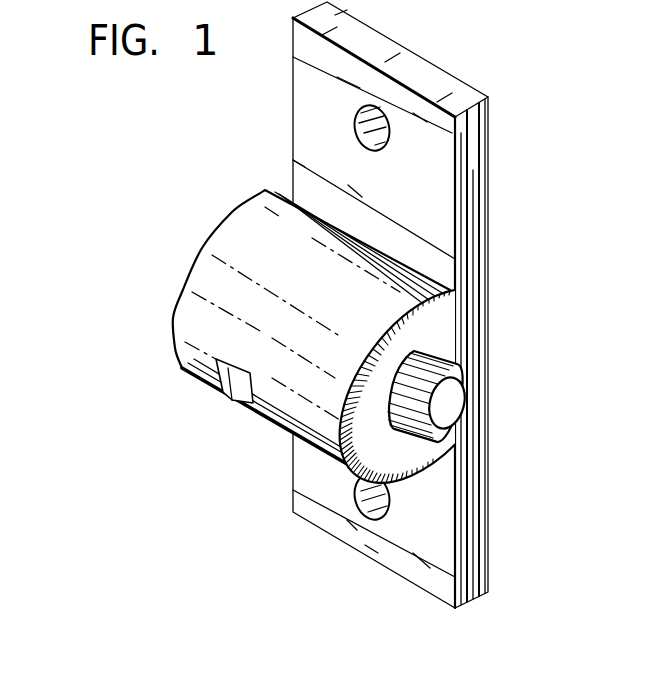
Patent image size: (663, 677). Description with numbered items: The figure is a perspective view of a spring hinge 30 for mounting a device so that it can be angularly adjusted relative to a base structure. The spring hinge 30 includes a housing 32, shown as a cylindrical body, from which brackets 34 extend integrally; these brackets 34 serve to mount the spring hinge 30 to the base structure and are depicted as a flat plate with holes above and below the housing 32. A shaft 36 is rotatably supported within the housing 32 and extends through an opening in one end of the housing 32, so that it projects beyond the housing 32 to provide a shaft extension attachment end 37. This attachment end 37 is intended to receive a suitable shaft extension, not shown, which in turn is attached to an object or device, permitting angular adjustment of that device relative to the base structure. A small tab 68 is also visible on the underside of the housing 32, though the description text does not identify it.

The spring hinge 30 is at (196, 203).
The housing 32 is at (200, 335).
The brackets 34 is at (427, 172).
The shaft 36 is at (445, 375).
The shaft extension attachment end 37 is at (460, 384).
The tab 68 is at (228, 400).